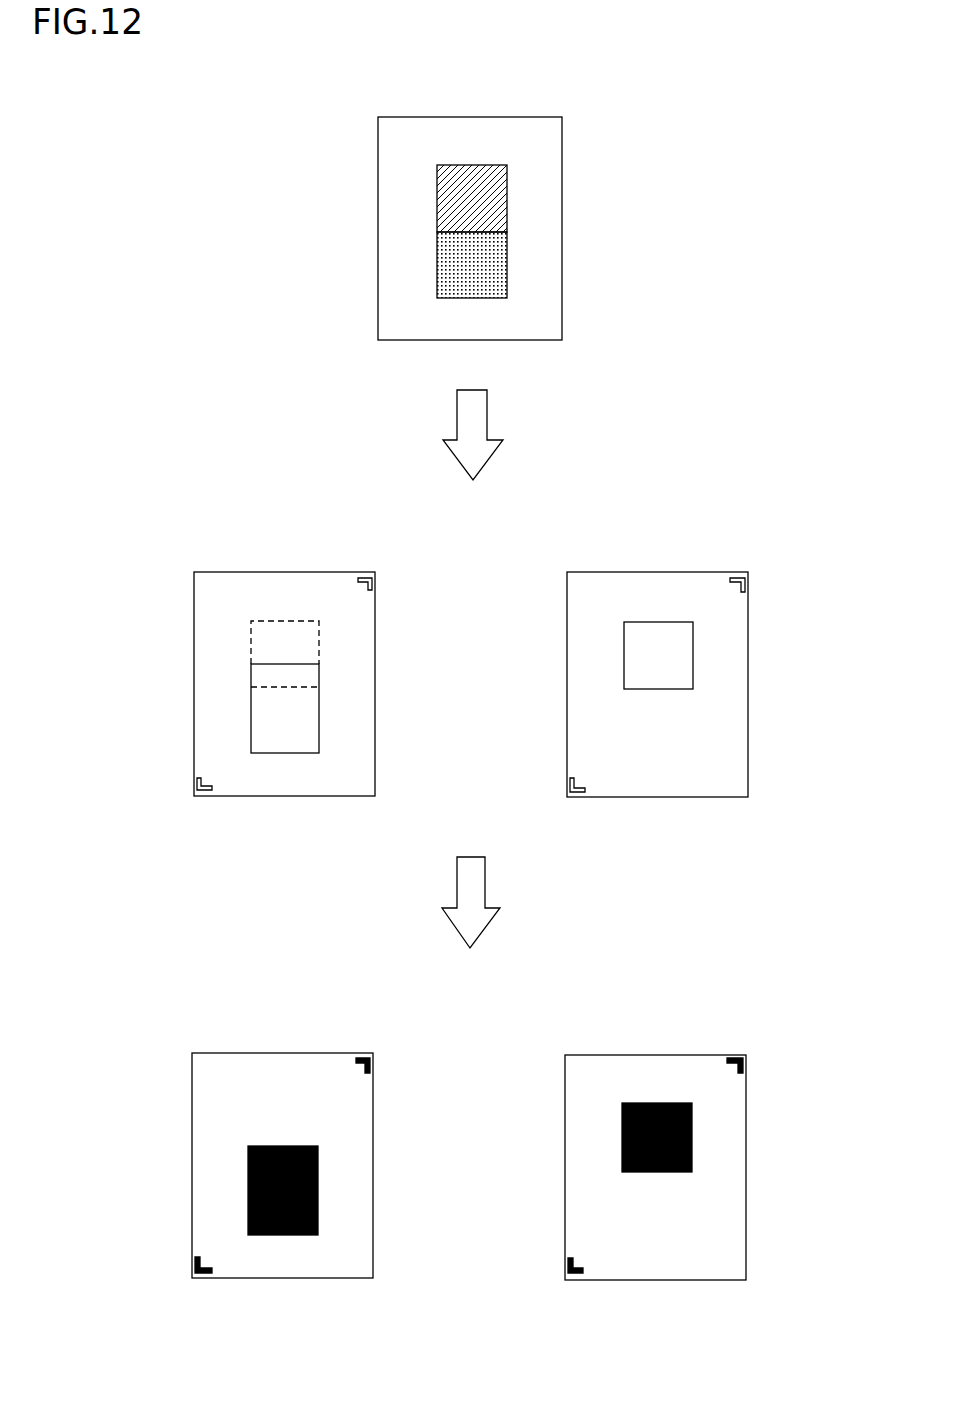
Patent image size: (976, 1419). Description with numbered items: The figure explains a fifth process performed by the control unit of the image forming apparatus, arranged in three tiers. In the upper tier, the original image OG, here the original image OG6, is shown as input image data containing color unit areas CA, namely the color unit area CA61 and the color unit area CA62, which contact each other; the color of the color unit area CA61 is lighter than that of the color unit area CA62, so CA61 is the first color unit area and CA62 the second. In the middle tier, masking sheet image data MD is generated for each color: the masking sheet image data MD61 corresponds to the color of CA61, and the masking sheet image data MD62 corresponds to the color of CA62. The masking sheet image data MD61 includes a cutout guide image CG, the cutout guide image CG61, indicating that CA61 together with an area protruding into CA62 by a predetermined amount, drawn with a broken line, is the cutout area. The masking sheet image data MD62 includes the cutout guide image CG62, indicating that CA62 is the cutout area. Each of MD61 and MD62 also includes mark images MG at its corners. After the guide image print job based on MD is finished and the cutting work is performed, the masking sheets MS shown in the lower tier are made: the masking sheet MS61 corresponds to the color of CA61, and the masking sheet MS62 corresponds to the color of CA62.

The original image OG is at (427, 234).
The original image OG6 is at (398, 140).
The color unit area CA is at (475, 249).
The color unit area CA61 is at (518, 265).
The color unit area CA62 is at (425, 197).
The masking sheet image data MD is at (453, 643).
The masking sheet image data MD61 is at (227, 571).
The masking sheet image data MD62 is at (598, 571).
The mark image MG is at (360, 577).
The cutout guide image CG is at (472, 685).
The cutout guide image CG61 is at (333, 729).
The cutout guide image CG62 is at (612, 648).
The masking sheet MS is at (451, 1126).
The masking sheet MS61 is at (222, 1052).
The masking sheet MS62 is at (595, 1053).